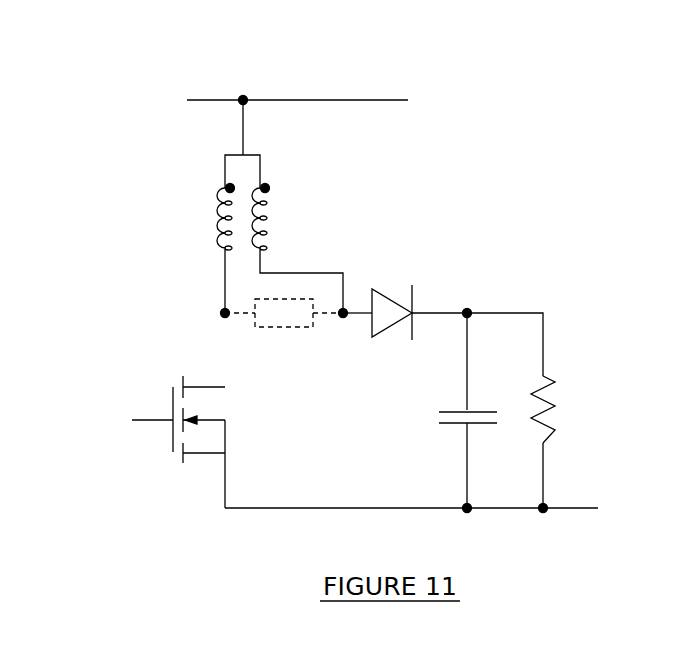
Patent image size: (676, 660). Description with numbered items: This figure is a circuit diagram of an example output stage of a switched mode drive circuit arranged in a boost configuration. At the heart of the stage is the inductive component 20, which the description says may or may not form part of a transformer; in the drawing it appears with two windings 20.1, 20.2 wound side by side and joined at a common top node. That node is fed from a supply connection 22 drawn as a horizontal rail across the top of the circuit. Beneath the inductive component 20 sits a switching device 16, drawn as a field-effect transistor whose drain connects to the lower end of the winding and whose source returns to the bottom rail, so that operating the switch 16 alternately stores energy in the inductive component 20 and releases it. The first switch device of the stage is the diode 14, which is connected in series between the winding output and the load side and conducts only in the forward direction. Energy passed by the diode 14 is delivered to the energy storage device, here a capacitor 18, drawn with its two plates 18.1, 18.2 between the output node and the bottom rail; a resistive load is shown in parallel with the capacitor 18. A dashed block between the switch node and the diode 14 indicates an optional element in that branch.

The diode 14 is at (393, 327).
The switching transistor 16 is at (123, 388).
The capacitor 18 is at (508, 394).
The first capacitor electrode 18.1 is at (457, 408).
The second capacitor electrode 18.2 is at (460, 426).
The inductive component 20 is at (228, 212).
The primary winding 20.1 is at (220, 225).
The secondary winding 20.2 is at (252, 247).
The supply voltage connection 22 is at (290, 168).